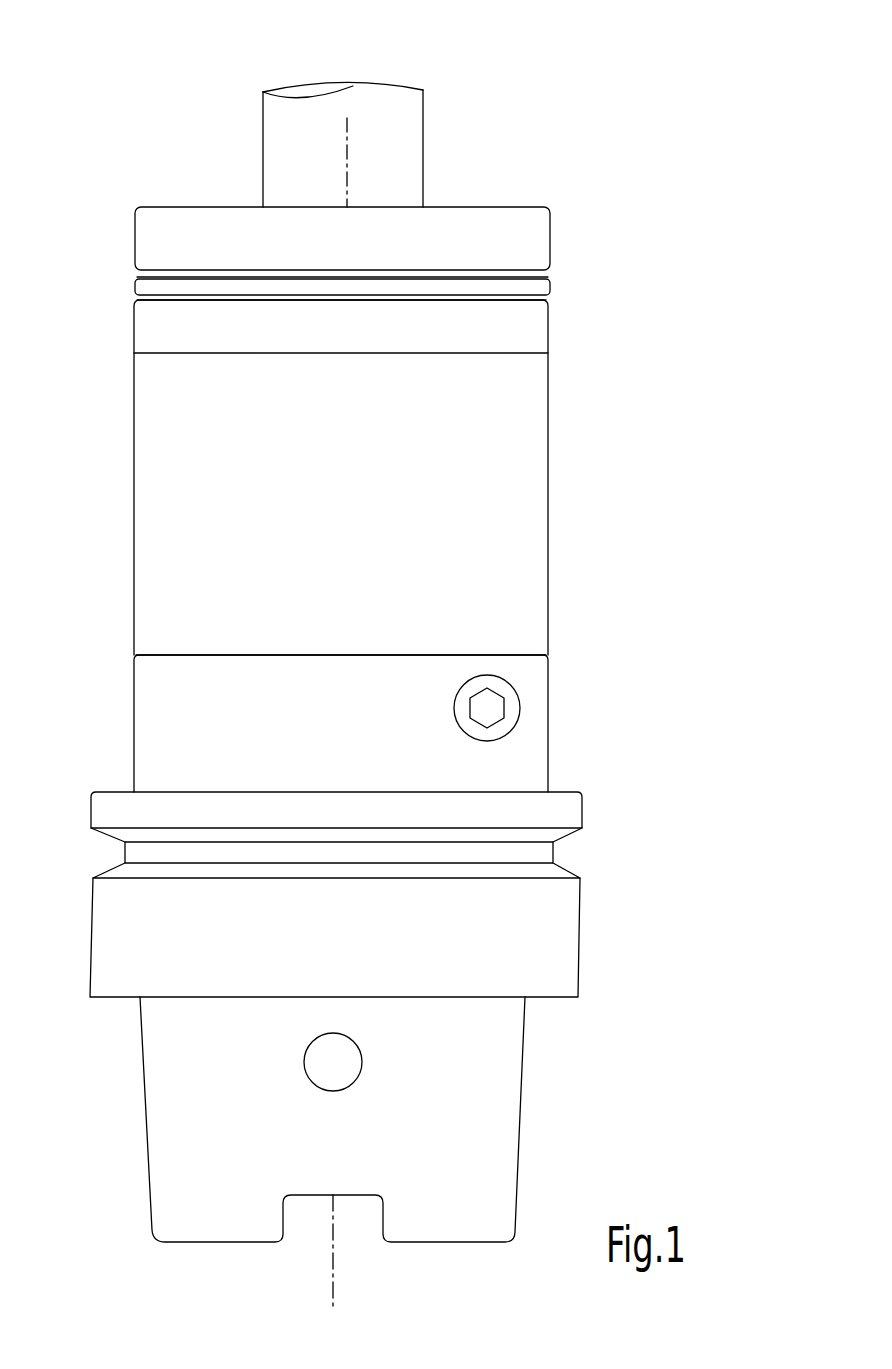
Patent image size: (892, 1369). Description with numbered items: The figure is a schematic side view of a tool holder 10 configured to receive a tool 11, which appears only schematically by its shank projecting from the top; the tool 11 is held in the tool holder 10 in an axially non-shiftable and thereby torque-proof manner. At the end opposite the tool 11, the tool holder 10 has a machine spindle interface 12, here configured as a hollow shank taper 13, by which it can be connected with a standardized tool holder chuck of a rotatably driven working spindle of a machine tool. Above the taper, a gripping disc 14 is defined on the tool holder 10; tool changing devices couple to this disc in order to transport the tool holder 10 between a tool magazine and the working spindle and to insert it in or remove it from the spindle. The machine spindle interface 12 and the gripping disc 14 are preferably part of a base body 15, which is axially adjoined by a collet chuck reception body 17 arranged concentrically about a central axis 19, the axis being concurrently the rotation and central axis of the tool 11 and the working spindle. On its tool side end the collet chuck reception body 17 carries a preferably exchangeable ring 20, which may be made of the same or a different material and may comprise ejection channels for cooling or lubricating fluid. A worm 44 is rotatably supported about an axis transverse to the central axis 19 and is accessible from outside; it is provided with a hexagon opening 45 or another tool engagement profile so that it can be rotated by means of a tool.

The tool holder 10 is at (625, 118).
The tool 11 is at (397, 133).
The machine spindle interface 12 is at (426, 1060).
The hollow shank taper 13 is at (480, 1165).
The gripping disc 14 is at (635, 857).
The base body 15 is at (430, 694).
The collet chuck reception body 17 is at (588, 485).
The central axis 19 is at (334, 1280).
The ring 20 is at (585, 278).
The worm 44 is at (515, 690).
The hexagon opening 45 is at (507, 707).